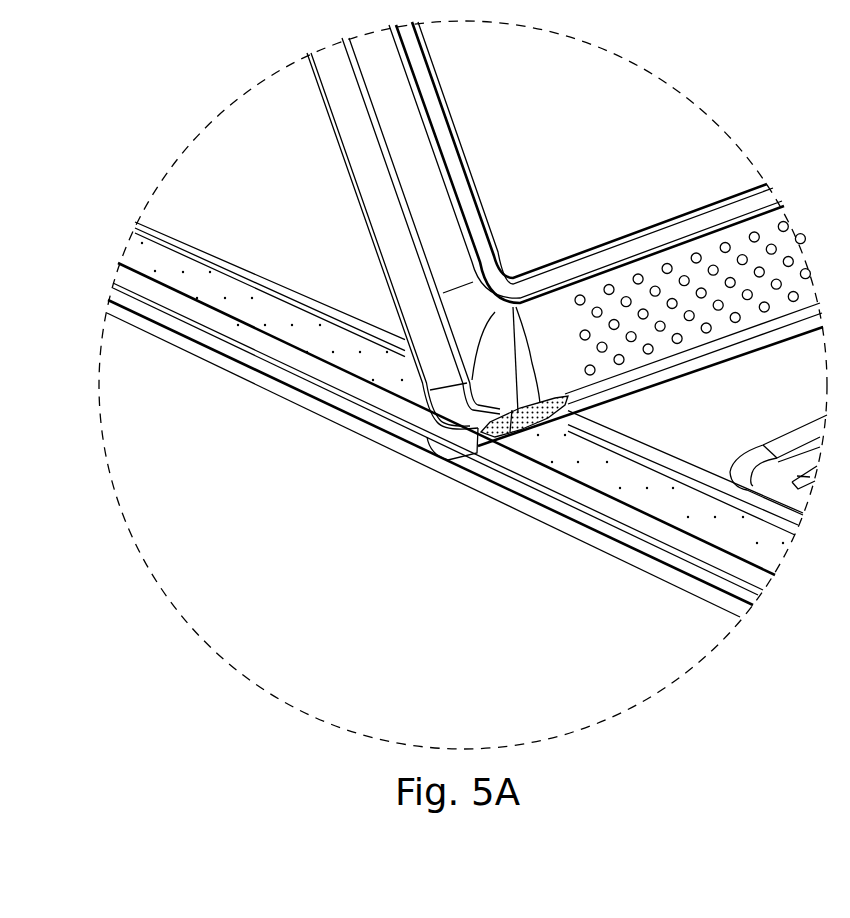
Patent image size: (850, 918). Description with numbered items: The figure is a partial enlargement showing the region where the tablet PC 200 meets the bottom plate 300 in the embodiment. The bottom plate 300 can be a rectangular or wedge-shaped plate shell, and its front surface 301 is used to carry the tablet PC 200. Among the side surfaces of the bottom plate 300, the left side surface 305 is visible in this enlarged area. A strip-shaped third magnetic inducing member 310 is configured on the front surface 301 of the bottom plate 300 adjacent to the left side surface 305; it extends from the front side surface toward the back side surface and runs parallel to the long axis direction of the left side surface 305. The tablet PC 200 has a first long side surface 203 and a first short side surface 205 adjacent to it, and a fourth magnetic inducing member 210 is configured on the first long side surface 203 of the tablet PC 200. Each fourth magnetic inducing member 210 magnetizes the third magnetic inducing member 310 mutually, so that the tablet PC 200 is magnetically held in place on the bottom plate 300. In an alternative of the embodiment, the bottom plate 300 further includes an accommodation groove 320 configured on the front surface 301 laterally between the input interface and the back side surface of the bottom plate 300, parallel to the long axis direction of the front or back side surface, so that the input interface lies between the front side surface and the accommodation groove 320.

The tablet PC 200 is at (566, 135).
The first long side surface 203 is at (607, 393).
The first short side surface 205 is at (357, 147).
The fourth magnetic inducing member 210 is at (463, 443).
The bottom plate 300 is at (280, 430).
The front surface 301 is at (677, 438).
The left side surface 305 is at (237, 353).
The third magnetic inducing member 310 is at (722, 522).
The accommodation groove 320 is at (432, 466).